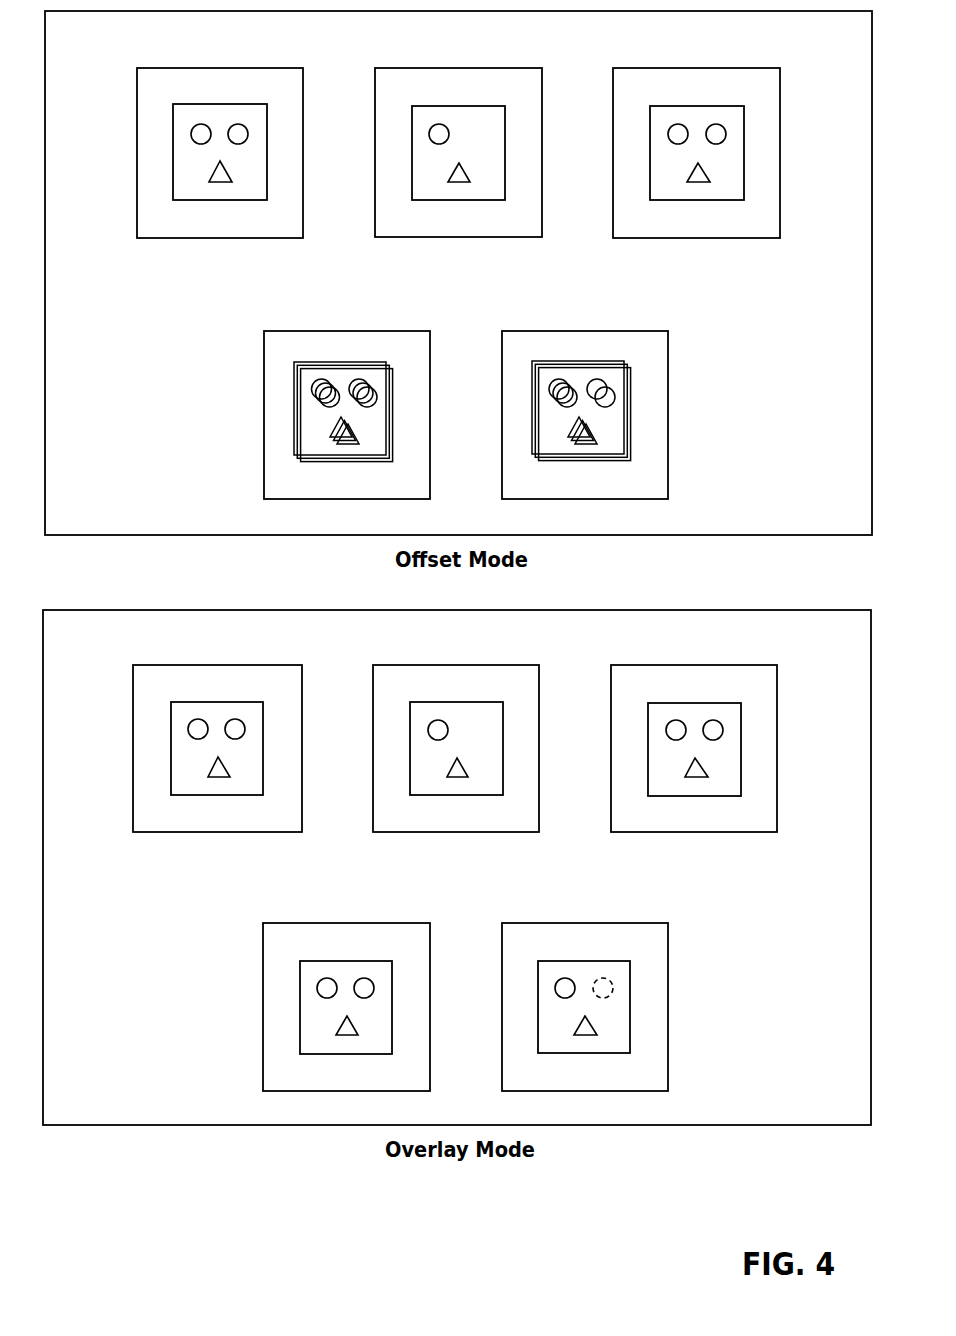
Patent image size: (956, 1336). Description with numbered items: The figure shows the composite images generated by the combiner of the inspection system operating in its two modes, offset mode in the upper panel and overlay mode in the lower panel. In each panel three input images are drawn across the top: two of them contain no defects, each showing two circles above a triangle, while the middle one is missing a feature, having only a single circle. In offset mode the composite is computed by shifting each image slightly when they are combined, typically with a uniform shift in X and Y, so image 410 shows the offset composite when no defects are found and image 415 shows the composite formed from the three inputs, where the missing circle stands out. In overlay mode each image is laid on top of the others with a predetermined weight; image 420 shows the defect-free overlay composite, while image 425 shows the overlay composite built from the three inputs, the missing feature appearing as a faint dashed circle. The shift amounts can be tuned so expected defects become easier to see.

The composite image 410 is at (363, 398).
The composite image 415 is at (602, 398).
The composite image 420 is at (353, 990).
The composite image 425 is at (602, 990).